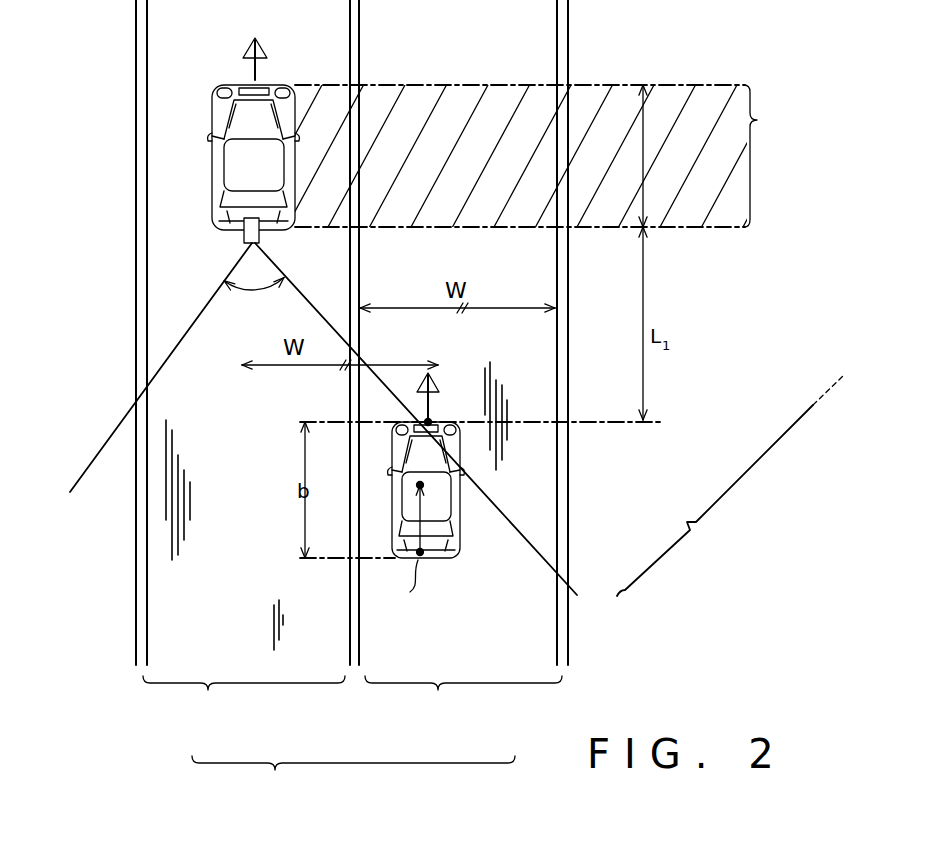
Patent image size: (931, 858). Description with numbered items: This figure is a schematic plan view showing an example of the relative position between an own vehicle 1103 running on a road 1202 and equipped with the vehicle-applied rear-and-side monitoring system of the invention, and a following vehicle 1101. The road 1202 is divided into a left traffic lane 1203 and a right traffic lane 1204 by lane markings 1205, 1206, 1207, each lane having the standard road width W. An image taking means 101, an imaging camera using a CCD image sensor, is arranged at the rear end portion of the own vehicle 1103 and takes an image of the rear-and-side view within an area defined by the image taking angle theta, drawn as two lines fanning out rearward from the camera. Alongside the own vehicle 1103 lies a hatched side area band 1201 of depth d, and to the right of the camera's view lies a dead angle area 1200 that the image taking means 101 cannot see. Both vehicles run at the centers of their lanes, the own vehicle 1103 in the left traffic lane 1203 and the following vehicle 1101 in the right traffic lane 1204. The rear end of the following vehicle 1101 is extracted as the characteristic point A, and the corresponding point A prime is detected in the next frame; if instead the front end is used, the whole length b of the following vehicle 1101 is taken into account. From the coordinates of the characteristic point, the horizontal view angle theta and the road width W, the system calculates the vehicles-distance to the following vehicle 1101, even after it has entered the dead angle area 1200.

The image taking means 101 is at (240, 242).
The own vehicle 1103 is at (212, 118).
The following vehicle 1101 is at (456, 520).
The side area band 1201 is at (757, 120).
The dead angle area 1200 is at (690, 527).
The road 1202 is at (276, 771).
The left traffic lane 1203 is at (208, 690).
The right traffic lane 1204 is at (438, 690).
The lane marking 1205 is at (147, 630).
The lane marking 1206 is at (569, 635).
The lane marking 1207 is at (359, 632).